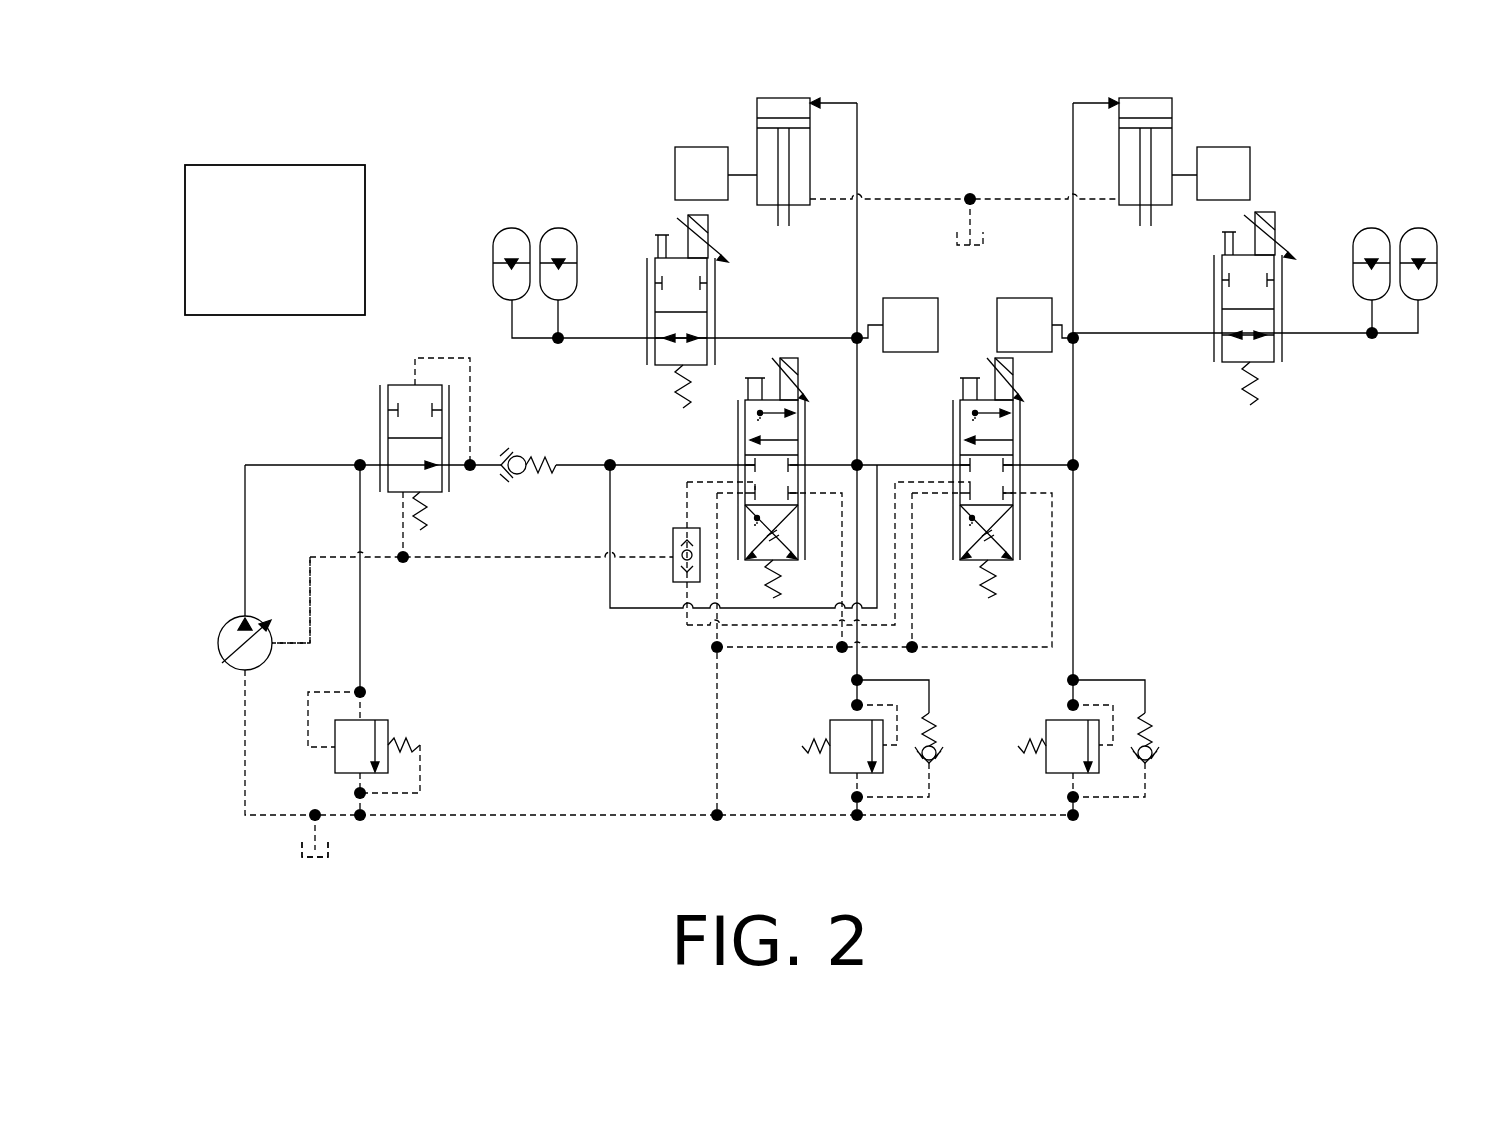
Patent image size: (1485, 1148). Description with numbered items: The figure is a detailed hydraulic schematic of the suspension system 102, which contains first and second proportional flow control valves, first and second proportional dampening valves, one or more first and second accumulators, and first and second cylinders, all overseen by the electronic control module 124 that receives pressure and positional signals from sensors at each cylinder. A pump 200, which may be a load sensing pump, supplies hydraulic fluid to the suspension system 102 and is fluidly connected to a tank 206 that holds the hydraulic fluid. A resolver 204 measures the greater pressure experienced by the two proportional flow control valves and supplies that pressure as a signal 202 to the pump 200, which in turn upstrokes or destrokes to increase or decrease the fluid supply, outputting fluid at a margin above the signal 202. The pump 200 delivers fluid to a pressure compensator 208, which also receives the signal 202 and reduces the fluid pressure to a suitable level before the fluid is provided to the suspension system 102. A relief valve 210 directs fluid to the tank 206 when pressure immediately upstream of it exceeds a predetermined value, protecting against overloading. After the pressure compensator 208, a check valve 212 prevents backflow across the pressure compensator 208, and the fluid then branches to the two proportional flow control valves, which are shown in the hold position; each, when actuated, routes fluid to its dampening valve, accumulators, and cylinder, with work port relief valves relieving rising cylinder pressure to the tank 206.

The suspension system 102 is at (217, 72).
The ECM 124 is at (256, 294).
The pump 200 is at (220, 643).
The signal 202 is at (286, 645).
The resolver 204 is at (666, 544).
The tank 206 is at (317, 867).
The pressure compensator 208 is at (388, 457).
The relief valve 210 is at (386, 735).
The check valve 212 is at (528, 447).